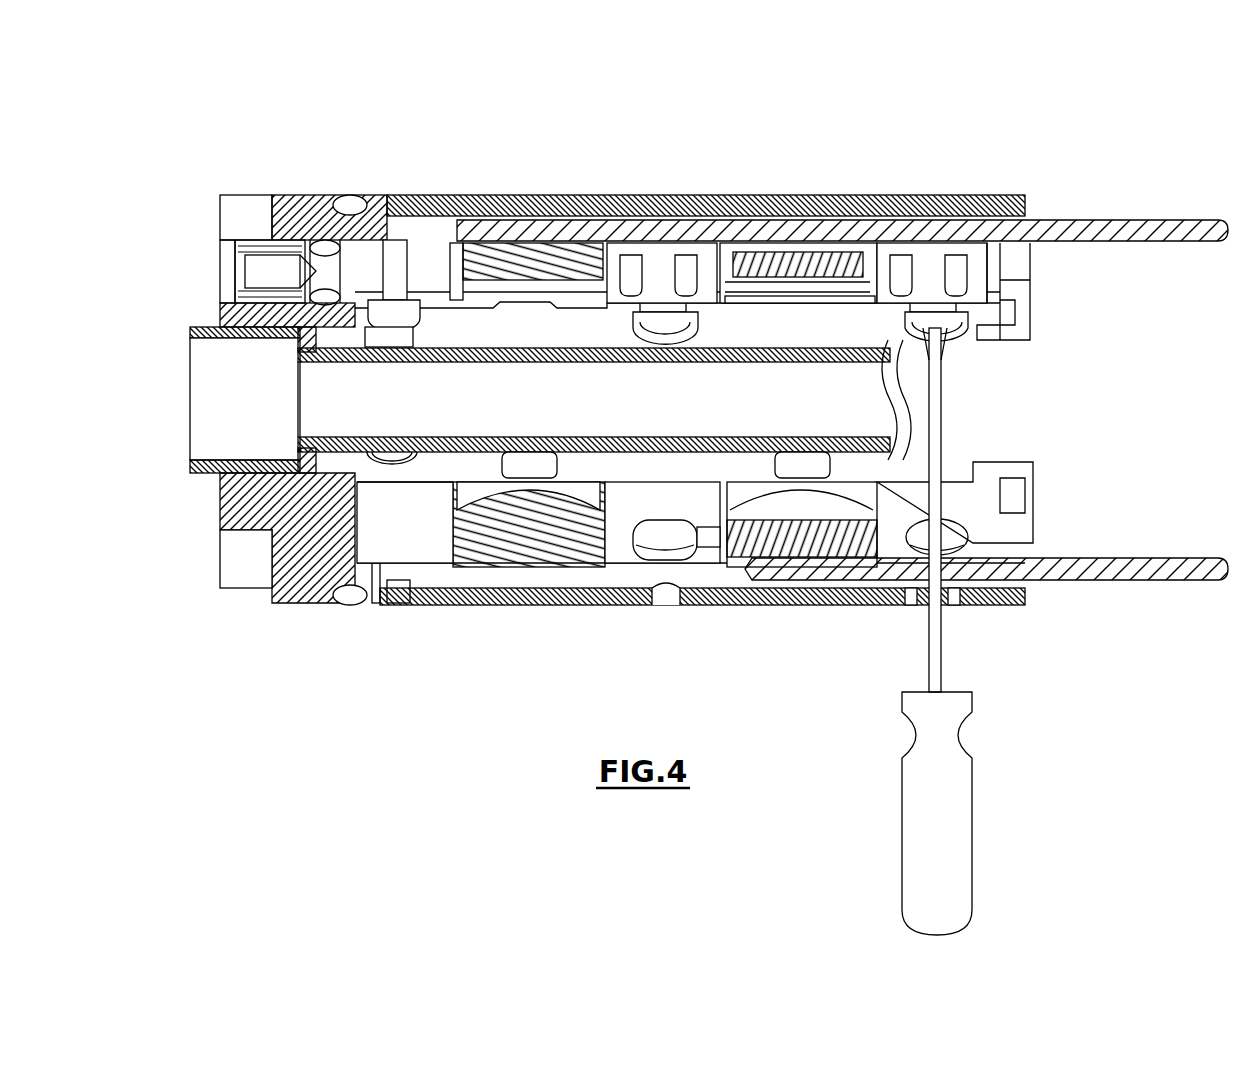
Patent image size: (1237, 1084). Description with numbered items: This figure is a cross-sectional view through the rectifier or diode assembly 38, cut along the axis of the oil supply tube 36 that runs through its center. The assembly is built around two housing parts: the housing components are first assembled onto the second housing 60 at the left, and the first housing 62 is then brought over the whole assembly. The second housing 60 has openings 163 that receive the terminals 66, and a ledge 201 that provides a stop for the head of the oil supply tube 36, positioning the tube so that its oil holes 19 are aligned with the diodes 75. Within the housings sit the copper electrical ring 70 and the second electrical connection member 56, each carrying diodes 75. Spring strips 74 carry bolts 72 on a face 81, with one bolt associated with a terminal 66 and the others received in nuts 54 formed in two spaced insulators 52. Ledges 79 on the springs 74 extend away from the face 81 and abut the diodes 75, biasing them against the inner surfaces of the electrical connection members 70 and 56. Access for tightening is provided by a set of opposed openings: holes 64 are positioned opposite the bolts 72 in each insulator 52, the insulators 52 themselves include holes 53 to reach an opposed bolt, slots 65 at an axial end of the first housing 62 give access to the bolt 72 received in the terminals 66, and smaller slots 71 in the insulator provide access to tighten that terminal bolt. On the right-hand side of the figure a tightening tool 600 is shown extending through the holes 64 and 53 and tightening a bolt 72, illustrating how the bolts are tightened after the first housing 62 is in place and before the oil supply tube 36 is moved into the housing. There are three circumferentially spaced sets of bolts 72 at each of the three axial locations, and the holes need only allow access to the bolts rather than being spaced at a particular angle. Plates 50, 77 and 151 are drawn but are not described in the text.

The diode assembly 38 is at (773, 130).
The terminal 66 is at (347, 198).
The diode 75 is at (490, 280).
The electrical ring 70 is at (535, 250).
The nut 54 is at (640, 270).
The insulator 52 is at (885, 250).
The plate 50 is at (1078, 220).
The opening 163 is at (220, 275).
The ledge 201 is at (297, 333).
The bolt 72 is at (394, 318).
The ledge 79 is at (508, 300).
The oil hole 19 is at (527, 405).
The spring strip 74 is at (440, 310).
The face 81 is at (731, 330).
The end piece 77 is at (930, 268).
The oil supply tube 36 is at (905, 422).
The slot 71 is at (397, 505).
The second housing 60 is at (220, 485).
The hole 53 is at (668, 537).
The plate 151 is at (1160, 572).
The slot 65 is at (400, 605).
The first housing 62 is at (528, 603).
The hole 64 is at (663, 597).
The electrical ring 56 is at (803, 557).
The tightening tool 600 is at (937, 635).